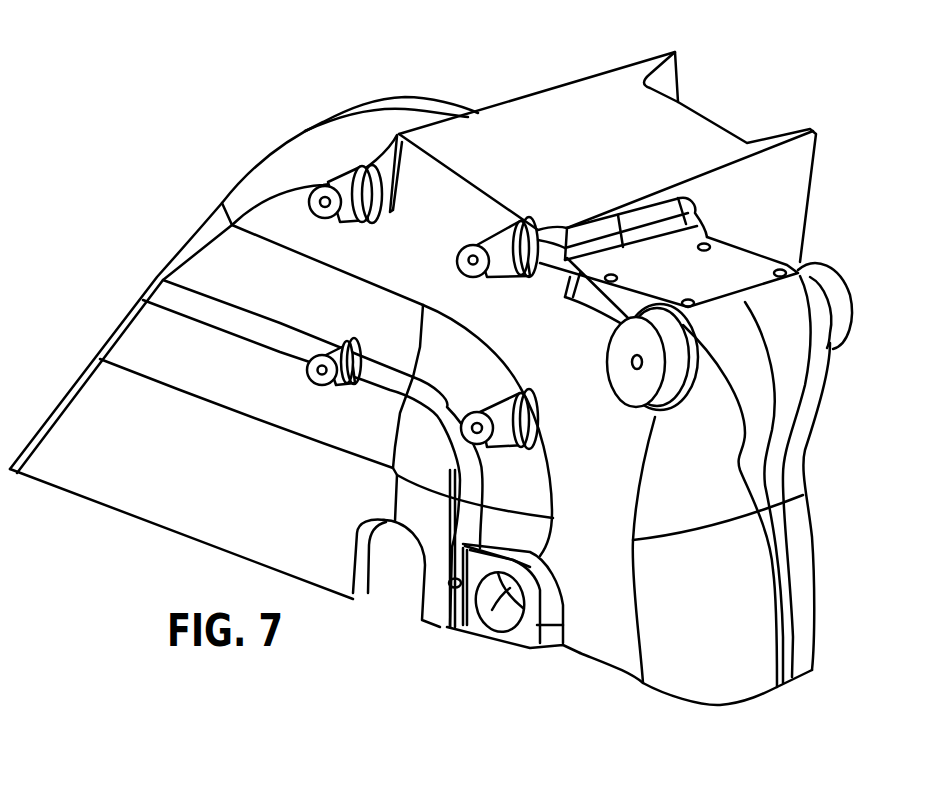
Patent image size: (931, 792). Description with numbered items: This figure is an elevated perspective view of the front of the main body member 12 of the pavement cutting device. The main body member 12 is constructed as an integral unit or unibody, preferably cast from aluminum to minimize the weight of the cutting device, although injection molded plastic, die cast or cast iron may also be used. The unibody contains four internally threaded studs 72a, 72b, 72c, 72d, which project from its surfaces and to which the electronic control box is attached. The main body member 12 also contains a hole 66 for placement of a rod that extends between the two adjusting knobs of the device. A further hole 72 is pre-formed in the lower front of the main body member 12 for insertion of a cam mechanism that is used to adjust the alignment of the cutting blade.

The main body member 12 is at (137, 268).
The hole 66 is at (637, 365).
The hole 72 is at (497, 612).
The internally threaded stud 72a is at (323, 187).
The internally threaded stud 72b is at (470, 268).
The internally threaded stud 72c is at (313, 368).
The internally threaded stud 72d is at (463, 449).